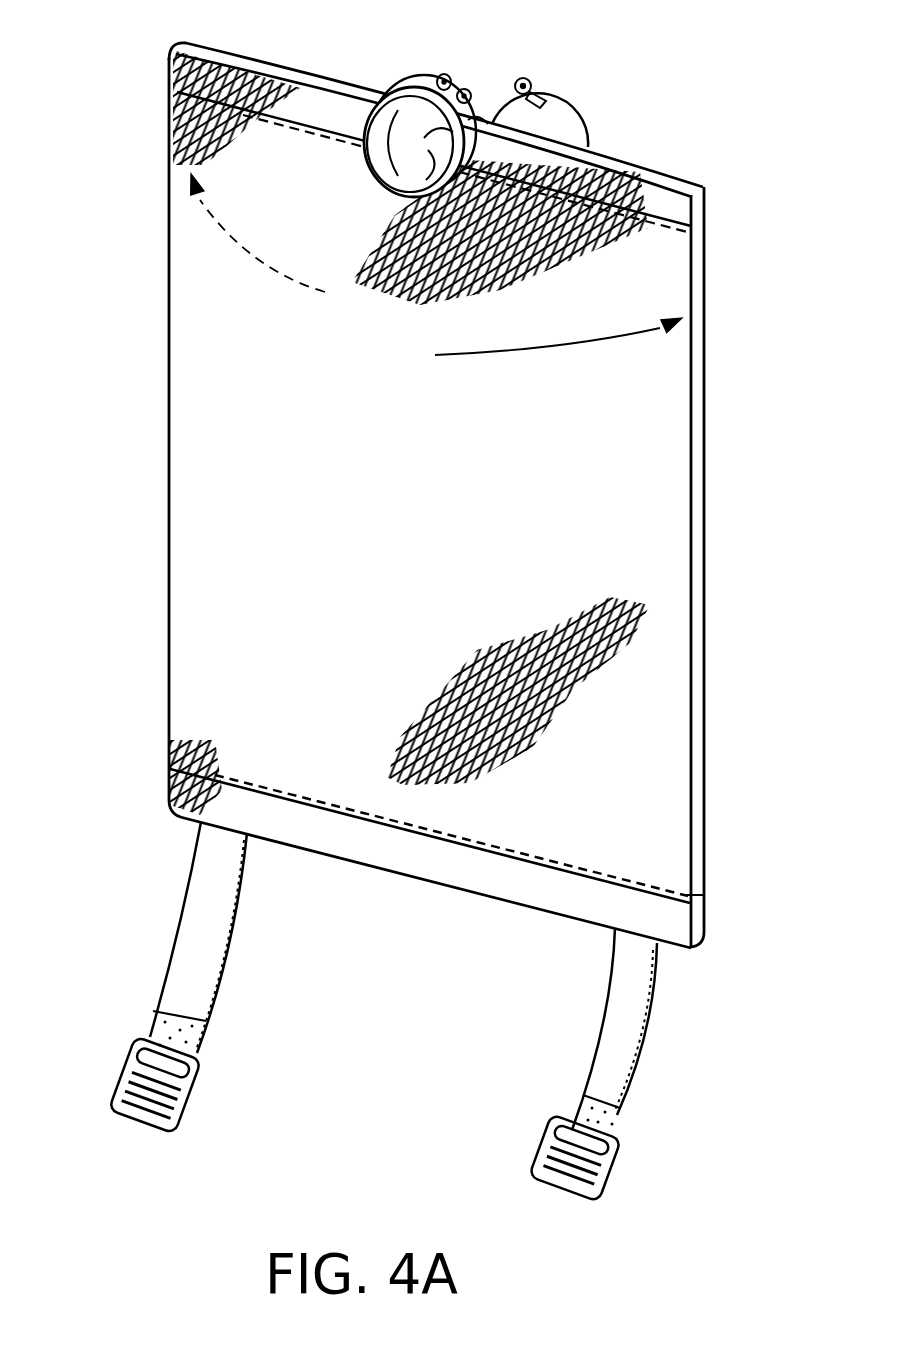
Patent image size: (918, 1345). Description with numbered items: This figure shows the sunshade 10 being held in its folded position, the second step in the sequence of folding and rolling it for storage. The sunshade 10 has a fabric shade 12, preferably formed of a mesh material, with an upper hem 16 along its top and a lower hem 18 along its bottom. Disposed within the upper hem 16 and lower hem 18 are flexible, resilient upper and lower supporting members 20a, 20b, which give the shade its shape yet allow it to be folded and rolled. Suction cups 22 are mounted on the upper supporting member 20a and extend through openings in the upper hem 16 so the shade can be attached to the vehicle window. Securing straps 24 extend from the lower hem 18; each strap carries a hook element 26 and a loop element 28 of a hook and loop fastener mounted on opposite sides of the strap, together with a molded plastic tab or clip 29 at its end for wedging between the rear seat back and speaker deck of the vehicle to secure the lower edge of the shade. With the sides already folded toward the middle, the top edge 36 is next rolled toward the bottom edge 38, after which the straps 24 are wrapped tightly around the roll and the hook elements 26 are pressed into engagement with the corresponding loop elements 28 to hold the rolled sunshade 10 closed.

The sunshade 10 is at (117, 150).
The fabric shade 12 is at (645, 488).
The upper hem 16 is at (273, 82).
The lower hem 18 is at (383, 870).
The upper supporting member 20a is at (693, 212).
The lower supporting member 20b is at (690, 923).
The suction cups 22 is at (408, 108).
The securing straps 24 is at (258, 989).
The hook element 26 is at (160, 1025).
The loop element 28 is at (238, 920).
The molded plastic tab or clip 29 is at (197, 1102).
The top edge 36 is at (652, 167).
The bottom edge 38 is at (490, 900).